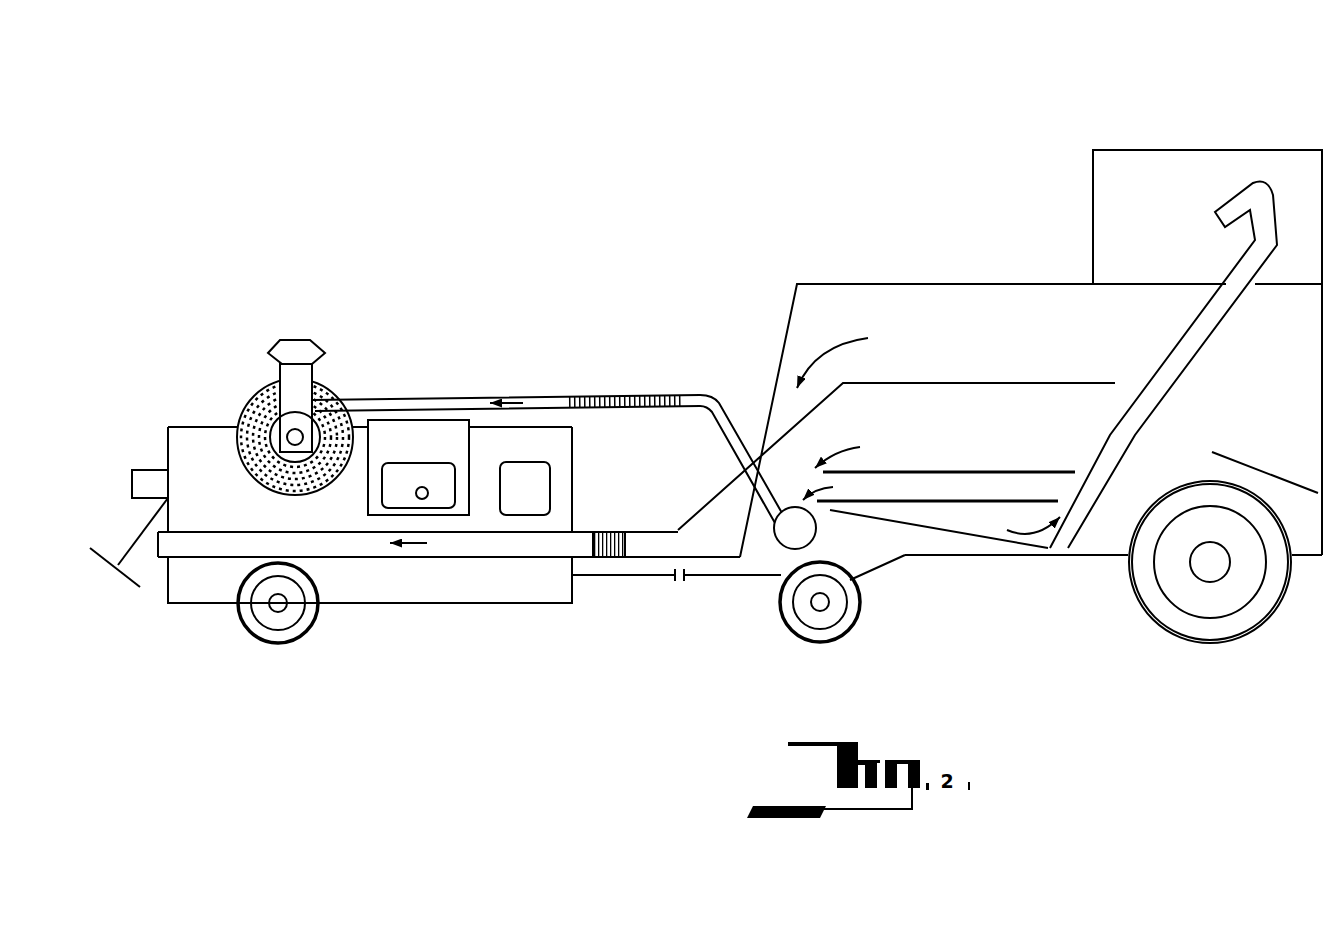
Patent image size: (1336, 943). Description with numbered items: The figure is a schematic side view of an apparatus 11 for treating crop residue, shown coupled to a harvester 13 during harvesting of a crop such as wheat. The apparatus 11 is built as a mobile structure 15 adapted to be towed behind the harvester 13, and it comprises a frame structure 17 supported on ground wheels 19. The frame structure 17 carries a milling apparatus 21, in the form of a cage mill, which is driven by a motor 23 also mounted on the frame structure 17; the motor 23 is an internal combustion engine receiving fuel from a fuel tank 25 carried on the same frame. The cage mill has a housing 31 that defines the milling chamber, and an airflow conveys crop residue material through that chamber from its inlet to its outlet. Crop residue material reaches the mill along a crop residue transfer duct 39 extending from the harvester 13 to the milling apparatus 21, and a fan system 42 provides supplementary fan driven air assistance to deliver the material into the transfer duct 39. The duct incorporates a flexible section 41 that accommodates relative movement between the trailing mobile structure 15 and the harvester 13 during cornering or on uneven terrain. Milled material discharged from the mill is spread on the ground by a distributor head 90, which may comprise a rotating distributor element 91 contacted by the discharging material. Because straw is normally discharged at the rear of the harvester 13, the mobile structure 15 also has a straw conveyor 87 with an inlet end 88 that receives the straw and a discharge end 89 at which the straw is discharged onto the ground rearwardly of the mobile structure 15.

The apparatus 11 is at (292, 312).
The harvester 13 is at (1021, 188).
The mobile structure 15 is at (160, 418).
The frame structure 17 is at (451, 585).
The ground wheels 19 is at (300, 632).
The milling apparatus 21 is at (255, 386).
The motor 23 is at (421, 438).
The fuel tank 25 is at (527, 481).
The housing 31 is at (333, 387).
The crop residue transfer duct 39 is at (570, 395).
The flexible section 41 is at (662, 394).
The fan system 42 is at (803, 531).
The straw conveyor 87 is at (520, 542).
The inlet end 88 is at (605, 558).
The discharge end 89 is at (185, 545).
The distributor head 90 is at (133, 587).
The rotating distributor element 91 is at (95, 557).